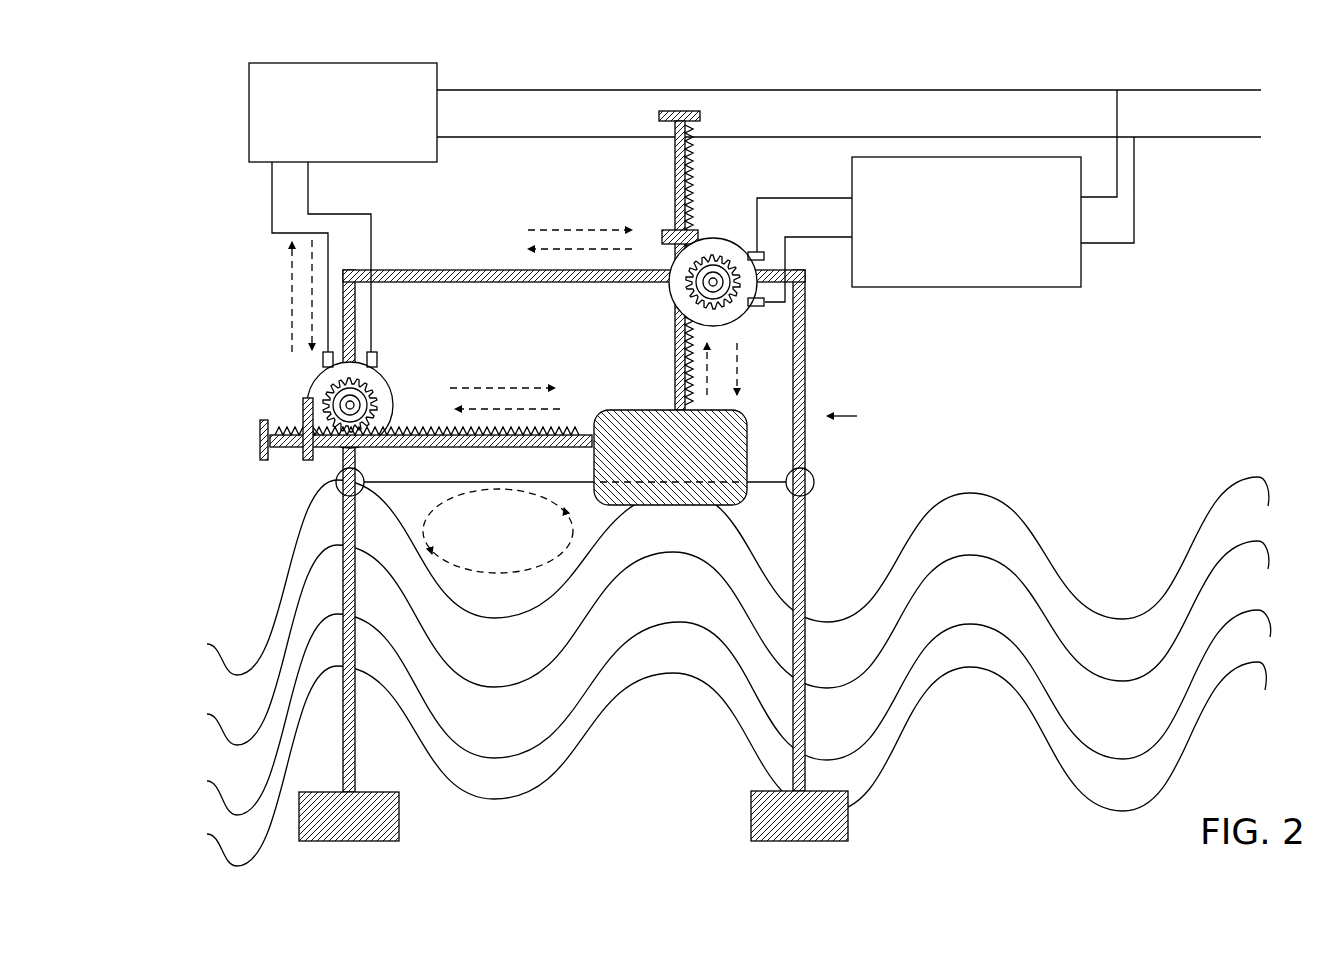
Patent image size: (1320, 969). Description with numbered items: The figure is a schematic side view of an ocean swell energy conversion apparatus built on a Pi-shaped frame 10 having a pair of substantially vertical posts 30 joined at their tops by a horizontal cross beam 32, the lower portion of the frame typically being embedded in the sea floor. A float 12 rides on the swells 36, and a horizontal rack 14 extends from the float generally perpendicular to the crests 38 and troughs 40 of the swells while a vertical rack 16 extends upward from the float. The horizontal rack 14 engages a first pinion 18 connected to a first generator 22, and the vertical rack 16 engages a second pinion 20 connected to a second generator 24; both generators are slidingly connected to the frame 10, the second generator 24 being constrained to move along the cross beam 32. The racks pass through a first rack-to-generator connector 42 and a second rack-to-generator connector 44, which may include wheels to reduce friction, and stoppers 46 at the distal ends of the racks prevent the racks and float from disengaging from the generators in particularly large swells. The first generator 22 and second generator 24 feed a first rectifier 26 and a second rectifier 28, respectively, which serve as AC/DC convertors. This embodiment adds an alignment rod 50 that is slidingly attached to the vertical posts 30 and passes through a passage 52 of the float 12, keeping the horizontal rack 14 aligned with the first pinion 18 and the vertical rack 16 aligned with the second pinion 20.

The frame 10 is at (860, 422).
The float 12 is at (628, 410).
The horizontal rack 14 is at (380, 448).
The vertical rack 16 is at (675, 318).
The first pinion 18 is at (387, 363).
The second pinion 20 is at (735, 240).
The first generator 22 is at (390, 402).
The second generator 24 is at (740, 240).
The first rectifier 26 is at (400, 164).
The second rectifier 28 is at (1043, 290).
The vertical posts 30 is at (342, 300).
The horizontal cross beam 32 is at (448, 270).
The swells 36 is at (268, 556).
The crests 38 is at (976, 490).
The troughs 40 is at (1118, 616).
The first rack-to-generator connector 42 is at (307, 462).
The second rack-to-generator connector 44 is at (663, 230).
The stoppers 46 is at (702, 116).
The alignment rod 50 is at (422, 478).
The passage 52 is at (748, 482).